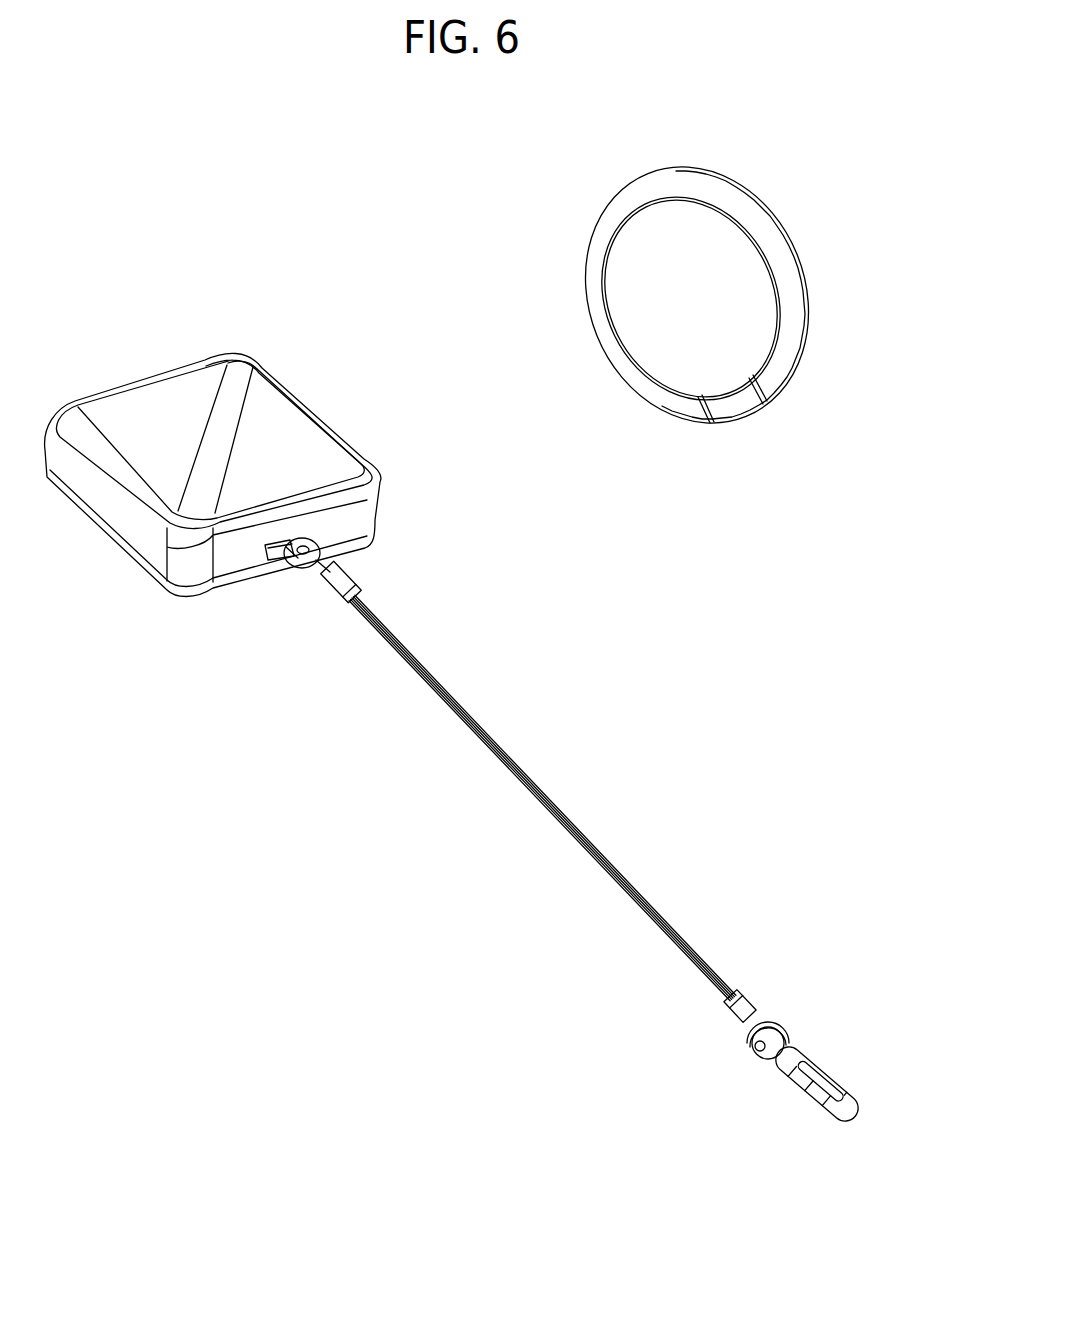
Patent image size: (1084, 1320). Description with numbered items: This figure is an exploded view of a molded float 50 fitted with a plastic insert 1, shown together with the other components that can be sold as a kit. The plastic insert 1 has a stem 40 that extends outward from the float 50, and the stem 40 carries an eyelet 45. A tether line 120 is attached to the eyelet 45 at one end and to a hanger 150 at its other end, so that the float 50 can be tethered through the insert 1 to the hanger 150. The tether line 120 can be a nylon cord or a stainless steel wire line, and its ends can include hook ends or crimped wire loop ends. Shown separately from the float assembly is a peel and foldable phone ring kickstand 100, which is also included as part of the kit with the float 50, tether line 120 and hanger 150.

The plastic insert 1 is at (343, 534).
The stem 40 is at (295, 570).
The eyelet 45 is at (293, 550).
The molded float 50 is at (323, 378).
The peel and foldable phone ring kickstand 100 is at (562, 192).
The tether line 120 is at (500, 750).
The hanger 150 is at (816, 1032).